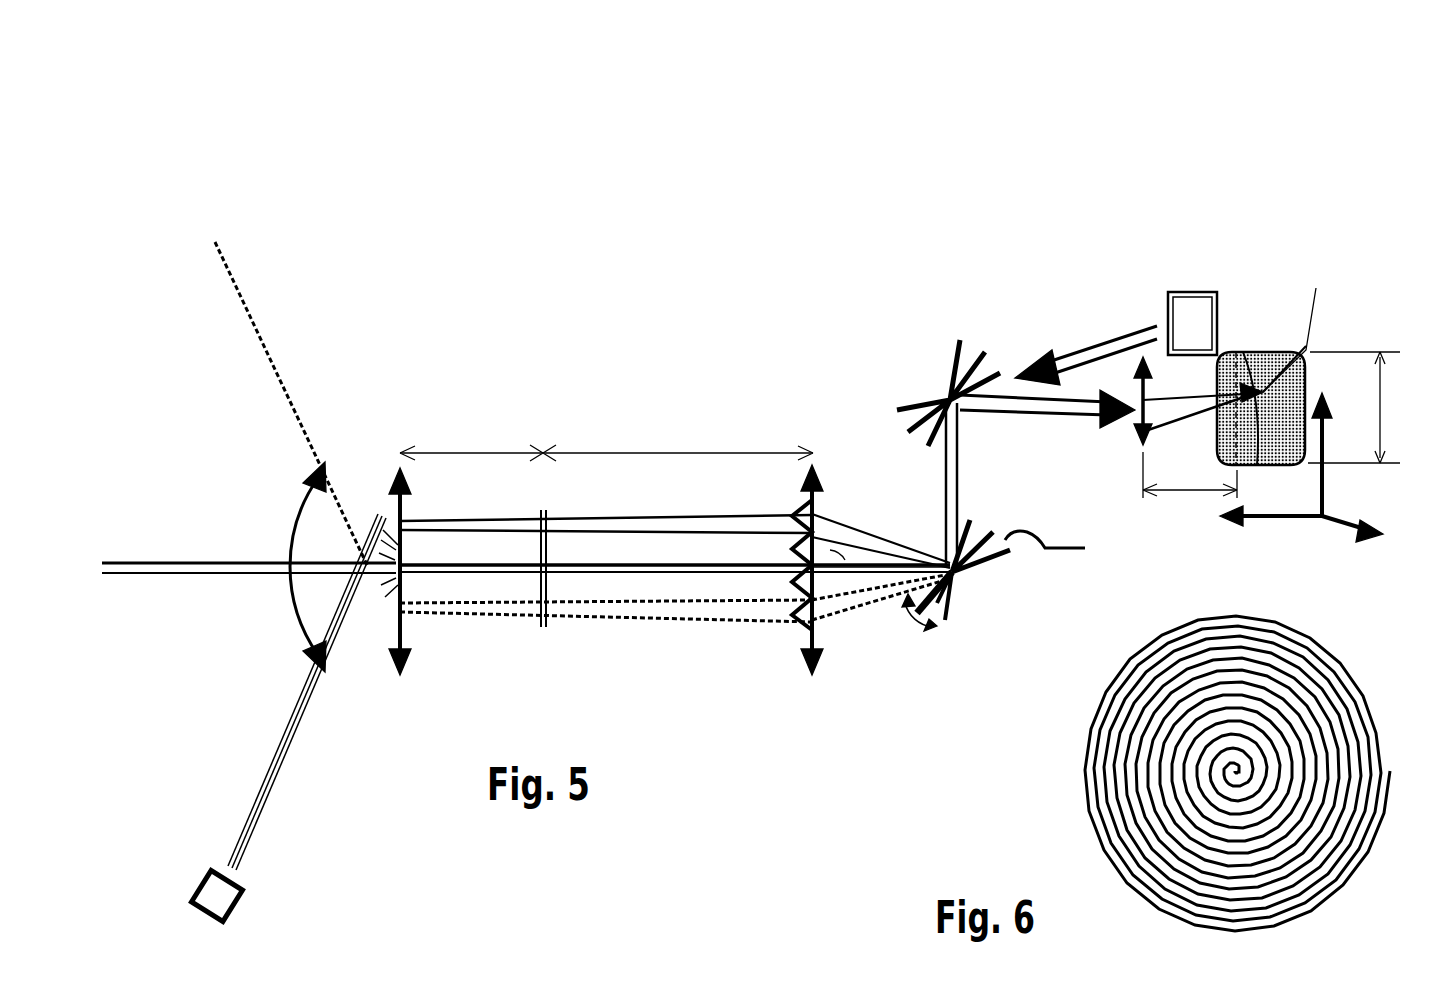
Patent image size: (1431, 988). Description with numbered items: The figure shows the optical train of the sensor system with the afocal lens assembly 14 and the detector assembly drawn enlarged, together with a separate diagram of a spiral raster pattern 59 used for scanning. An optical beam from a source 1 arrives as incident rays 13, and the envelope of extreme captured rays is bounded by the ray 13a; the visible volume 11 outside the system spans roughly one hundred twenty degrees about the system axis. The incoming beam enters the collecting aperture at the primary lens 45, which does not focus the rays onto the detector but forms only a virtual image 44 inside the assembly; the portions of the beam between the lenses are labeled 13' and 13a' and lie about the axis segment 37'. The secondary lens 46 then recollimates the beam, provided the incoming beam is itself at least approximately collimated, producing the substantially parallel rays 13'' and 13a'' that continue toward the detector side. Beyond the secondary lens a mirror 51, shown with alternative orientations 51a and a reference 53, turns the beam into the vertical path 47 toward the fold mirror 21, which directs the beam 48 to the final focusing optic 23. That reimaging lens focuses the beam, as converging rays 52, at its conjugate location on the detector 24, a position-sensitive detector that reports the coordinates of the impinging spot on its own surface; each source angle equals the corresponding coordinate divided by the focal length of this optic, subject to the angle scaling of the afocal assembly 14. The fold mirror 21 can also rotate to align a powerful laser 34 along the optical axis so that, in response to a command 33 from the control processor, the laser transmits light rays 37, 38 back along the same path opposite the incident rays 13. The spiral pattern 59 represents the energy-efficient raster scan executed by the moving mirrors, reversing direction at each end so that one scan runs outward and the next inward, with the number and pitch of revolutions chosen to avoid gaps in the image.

In FIG. 5, the source 1 is at (217, 896).
In FIG. 5, the visible volume 11 is at (280, 567).
In FIG. 5, the incident rays 13 is at (307, 692).
In FIG. 5, the extreme captured ray 13a is at (291, 404).
In FIG. 5, the expanded laser beam 13' is at (606, 514).
In FIG. 5, the expanded reflected beam 13a' is at (606, 604).
In FIG. 5, the refocused laser beam 13'' is at (881, 539).
In FIG. 5, the refocused reflected beam 13a'' is at (878, 638).
In FIG. 5, the afocal lens assembly 14 is at (606, 543).
In FIG. 5, the fold mirror 21 is at (948, 393).
In FIG. 5, the final focusing optic 23 is at (1159, 401).
In FIG. 5, the detector 24 is at (1271, 408).
In FIG. 5, the command 33 is at (1086, 350).
In FIG. 5, the powerful laser 34 is at (1192, 323).
In FIG. 5, the light ray 37 is at (881, 613).
In FIG. 5, the optical axis segment 37' is at (675, 556).
In FIG. 5, the light ray 38 is at (249, 556).
In FIG. 5, the virtual image 44 is at (541, 553).
In FIG. 5, the primary lens 45 is at (405, 576).
In FIG. 5, the secondary lens 46 is at (797, 575).
In FIG. 5, the redirected beam 47 is at (932, 485).
In FIG. 5, the outgoing scanned beam 48 is at (1047, 415).
In FIG. 5, the tilting mirror 51 is at (939, 611).
In FIG. 5, the mirror tilt positions 51a is at (985, 536).
In FIG. 5, the focused return beam 52 is at (1203, 414).
In FIG. 5, the mirror reference 53 is at (1060, 544).
In FIG. 6, the spiral scan pattern 59 is at (1288, 884).